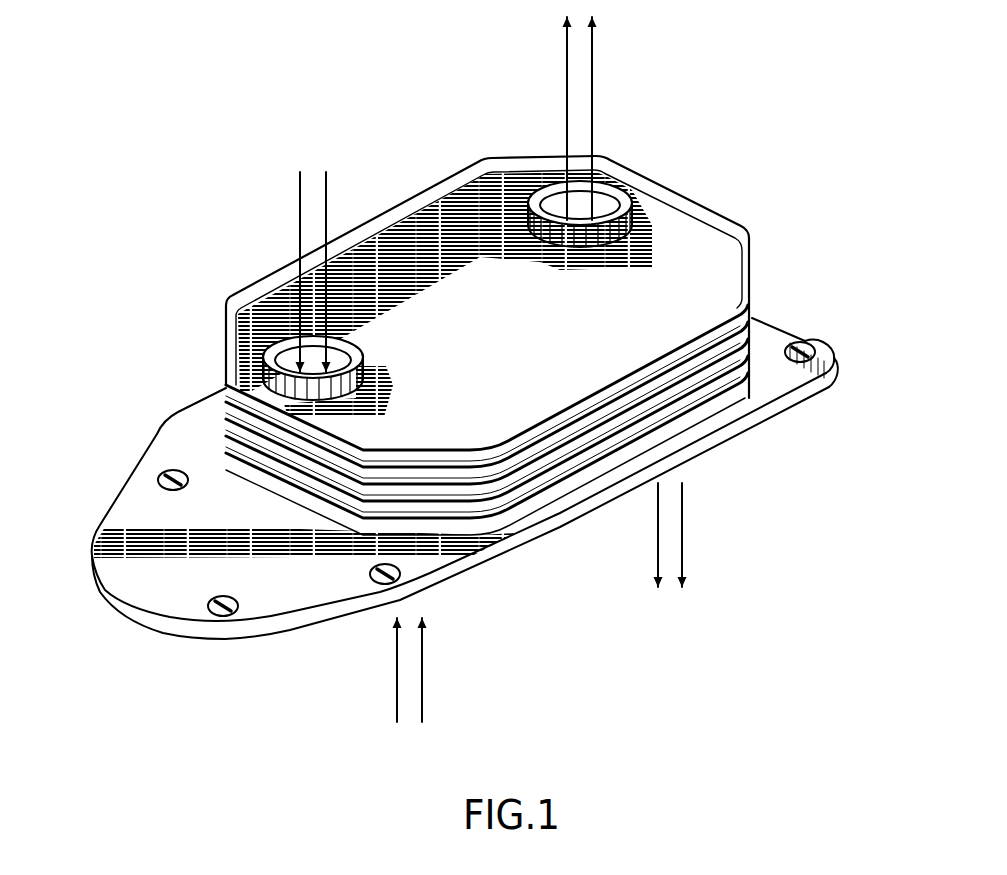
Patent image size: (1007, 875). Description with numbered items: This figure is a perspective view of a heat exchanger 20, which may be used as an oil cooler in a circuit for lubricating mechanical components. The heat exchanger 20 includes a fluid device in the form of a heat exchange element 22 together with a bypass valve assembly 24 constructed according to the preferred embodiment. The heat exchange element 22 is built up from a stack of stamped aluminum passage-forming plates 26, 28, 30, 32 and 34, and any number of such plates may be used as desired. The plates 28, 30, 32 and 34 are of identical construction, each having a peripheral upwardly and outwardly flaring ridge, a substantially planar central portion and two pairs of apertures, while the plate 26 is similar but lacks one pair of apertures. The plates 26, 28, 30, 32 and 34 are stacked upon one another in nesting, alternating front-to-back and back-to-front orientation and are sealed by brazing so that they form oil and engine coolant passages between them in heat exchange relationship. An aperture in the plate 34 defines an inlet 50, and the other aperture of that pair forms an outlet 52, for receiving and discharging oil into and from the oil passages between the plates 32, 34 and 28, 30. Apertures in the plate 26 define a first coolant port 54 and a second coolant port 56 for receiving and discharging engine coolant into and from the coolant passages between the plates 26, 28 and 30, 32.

The heat exchanger 20 is at (442, 369).
The heat exchange element 22 is at (471, 320).
The bypass valve assembly 24 is at (463, 478).
The passage-forming plate 26 is at (524, 277).
The passage-forming plate 28 is at (757, 318).
The passage-forming plate 30 is at (759, 337).
The passage-forming plate 32 is at (758, 355).
The passage-forming plate 34 is at (757, 373).
The inlet 50 is at (504, 563).
The outlet 52 is at (745, 420).
The first coolant port 54 is at (272, 336).
The second coolant port 56 is at (601, 208).